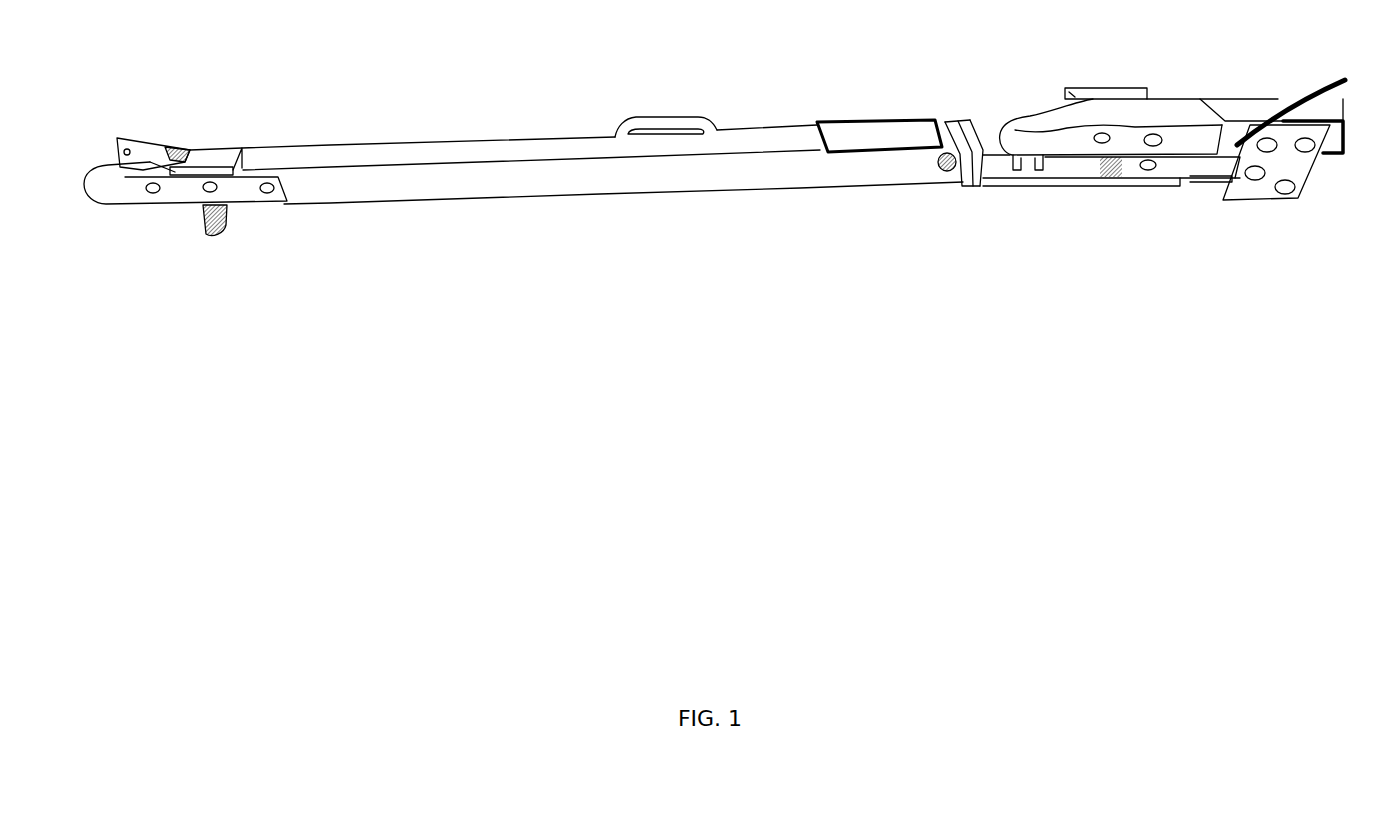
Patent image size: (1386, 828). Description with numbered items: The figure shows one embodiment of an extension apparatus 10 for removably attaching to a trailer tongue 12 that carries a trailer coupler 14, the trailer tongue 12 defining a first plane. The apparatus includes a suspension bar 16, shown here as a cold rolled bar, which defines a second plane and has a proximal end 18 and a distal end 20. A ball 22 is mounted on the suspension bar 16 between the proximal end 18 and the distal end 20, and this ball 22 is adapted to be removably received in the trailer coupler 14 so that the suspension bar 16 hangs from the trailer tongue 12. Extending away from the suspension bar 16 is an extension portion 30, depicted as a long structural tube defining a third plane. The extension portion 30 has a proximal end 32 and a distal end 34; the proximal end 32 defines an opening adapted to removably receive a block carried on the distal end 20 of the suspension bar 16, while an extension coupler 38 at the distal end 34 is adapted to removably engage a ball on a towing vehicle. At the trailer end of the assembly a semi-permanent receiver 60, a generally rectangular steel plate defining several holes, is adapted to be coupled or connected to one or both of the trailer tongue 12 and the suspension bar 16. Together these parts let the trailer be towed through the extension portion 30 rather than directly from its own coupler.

The extension apparatus 10 is at (688, 108).
The trailer tongue 12 is at (1238, 112).
The trailer coupler 14 is at (1090, 110).
The suspension bar 16 is at (1075, 183).
The proximal end 18 is at (1187, 175).
The distal end 20 is at (987, 187).
The ball 22 is at (1028, 168).
The extension portion 30 is at (425, 188).
The proximal end 32 is at (957, 173).
The distal end 34 is at (188, 207).
The extension coupler 38 is at (198, 160).
The semi-permanent receiver 60 is at (1258, 192).